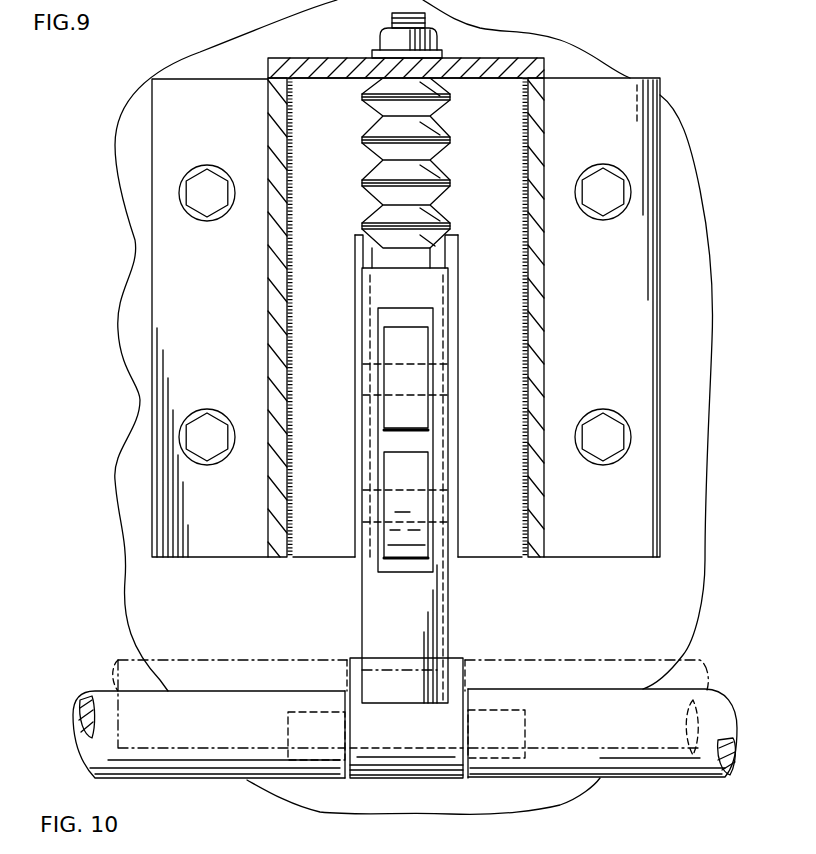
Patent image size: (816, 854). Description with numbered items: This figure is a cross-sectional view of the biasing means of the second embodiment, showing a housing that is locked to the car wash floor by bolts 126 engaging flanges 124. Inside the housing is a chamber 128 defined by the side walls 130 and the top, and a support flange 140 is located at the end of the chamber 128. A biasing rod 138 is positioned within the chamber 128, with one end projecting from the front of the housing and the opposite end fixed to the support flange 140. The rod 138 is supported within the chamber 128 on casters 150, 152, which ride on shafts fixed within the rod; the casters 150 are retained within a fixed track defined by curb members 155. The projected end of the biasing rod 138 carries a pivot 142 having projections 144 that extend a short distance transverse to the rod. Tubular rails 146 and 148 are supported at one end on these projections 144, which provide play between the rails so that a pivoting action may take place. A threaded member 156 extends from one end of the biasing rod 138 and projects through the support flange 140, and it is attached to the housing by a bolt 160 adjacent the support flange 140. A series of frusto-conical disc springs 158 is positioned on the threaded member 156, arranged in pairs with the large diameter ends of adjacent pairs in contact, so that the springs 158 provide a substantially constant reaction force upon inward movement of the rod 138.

The flanges 124 is at (168, 300).
The bolts 126 is at (192, 198).
The chamber 128 is at (497, 117).
The side walls 130 is at (272, 115).
The biasing rod 138 is at (437, 617).
The support flange 140 is at (475, 65).
The pivot 142 is at (410, 772).
The projections 144 is at (300, 724).
The tubular rail 146 is at (102, 700).
The tubular rail 148 is at (716, 700).
The casters 150 is at (402, 470).
The casters 152 is at (398, 378).
The curb members 155 is at (362, 250).
The threaded member 156 is at (425, 20).
The disc springs 158 is at (437, 150).
The bolt 160 is at (388, 43).